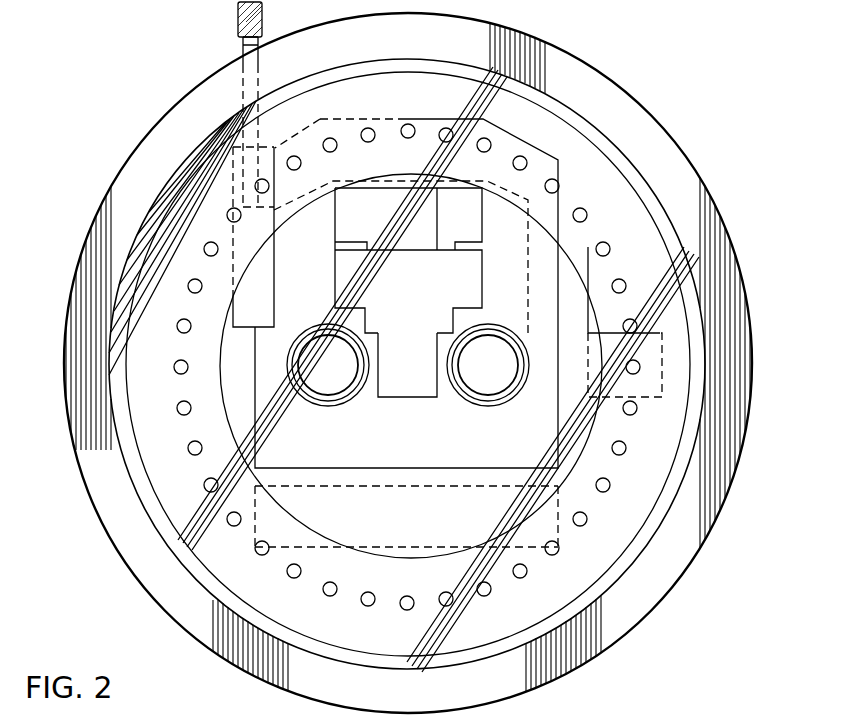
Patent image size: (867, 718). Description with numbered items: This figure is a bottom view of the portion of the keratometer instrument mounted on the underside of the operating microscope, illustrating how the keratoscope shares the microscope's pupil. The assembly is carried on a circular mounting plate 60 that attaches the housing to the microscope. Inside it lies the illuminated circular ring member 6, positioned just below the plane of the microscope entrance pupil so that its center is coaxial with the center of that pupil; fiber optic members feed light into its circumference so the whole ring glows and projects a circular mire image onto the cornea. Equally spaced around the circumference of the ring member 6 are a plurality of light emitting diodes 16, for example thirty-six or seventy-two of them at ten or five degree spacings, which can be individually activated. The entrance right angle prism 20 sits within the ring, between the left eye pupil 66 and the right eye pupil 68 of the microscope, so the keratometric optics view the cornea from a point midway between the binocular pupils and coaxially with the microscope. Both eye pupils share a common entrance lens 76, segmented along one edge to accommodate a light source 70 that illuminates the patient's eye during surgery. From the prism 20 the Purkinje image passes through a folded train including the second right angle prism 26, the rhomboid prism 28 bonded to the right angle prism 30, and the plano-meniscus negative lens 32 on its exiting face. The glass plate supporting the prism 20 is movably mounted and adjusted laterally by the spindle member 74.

The illuminated circular ring member 6 is at (634, 573).
The light emitting diodes 16 is at (177, 407).
The right angle prism 20 is at (411, 384).
The second right angle prism 26 is at (437, 228).
The rhomboid prism 28 is at (546, 259).
The right angle prism 30 is at (578, 403).
The plano-meniscus negative lens 32 is at (645, 338).
The circular mounting plate 60 is at (130, 533).
The left eye pupil 66 is at (338, 406).
The right eye pupil 68 is at (500, 398).
The light source 70 is at (460, 483).
The spindle member 74 is at (240, 27).
The common entrance lens 76 is at (572, 452).